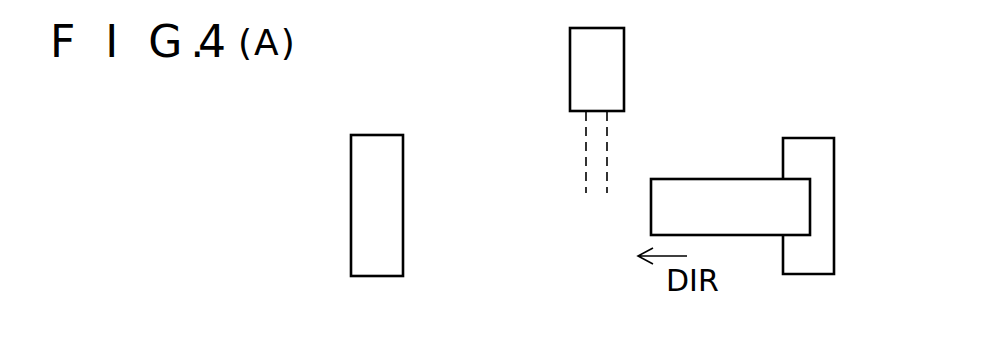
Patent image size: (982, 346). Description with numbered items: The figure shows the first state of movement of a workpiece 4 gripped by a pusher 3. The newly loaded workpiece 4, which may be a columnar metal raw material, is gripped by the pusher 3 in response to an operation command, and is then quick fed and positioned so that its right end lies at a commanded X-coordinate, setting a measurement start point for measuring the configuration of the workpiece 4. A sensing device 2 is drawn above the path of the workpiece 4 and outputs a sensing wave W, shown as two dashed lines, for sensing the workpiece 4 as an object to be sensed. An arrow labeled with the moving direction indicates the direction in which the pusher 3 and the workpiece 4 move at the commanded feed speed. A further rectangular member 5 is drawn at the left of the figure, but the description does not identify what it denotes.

The sensing device 2 is at (614, 59).
The pusher 3 is at (823, 157).
The workpiece 4 is at (709, 190).
The detector / receiver 5 is at (374, 147).
The sensing wave W is at (593, 139).